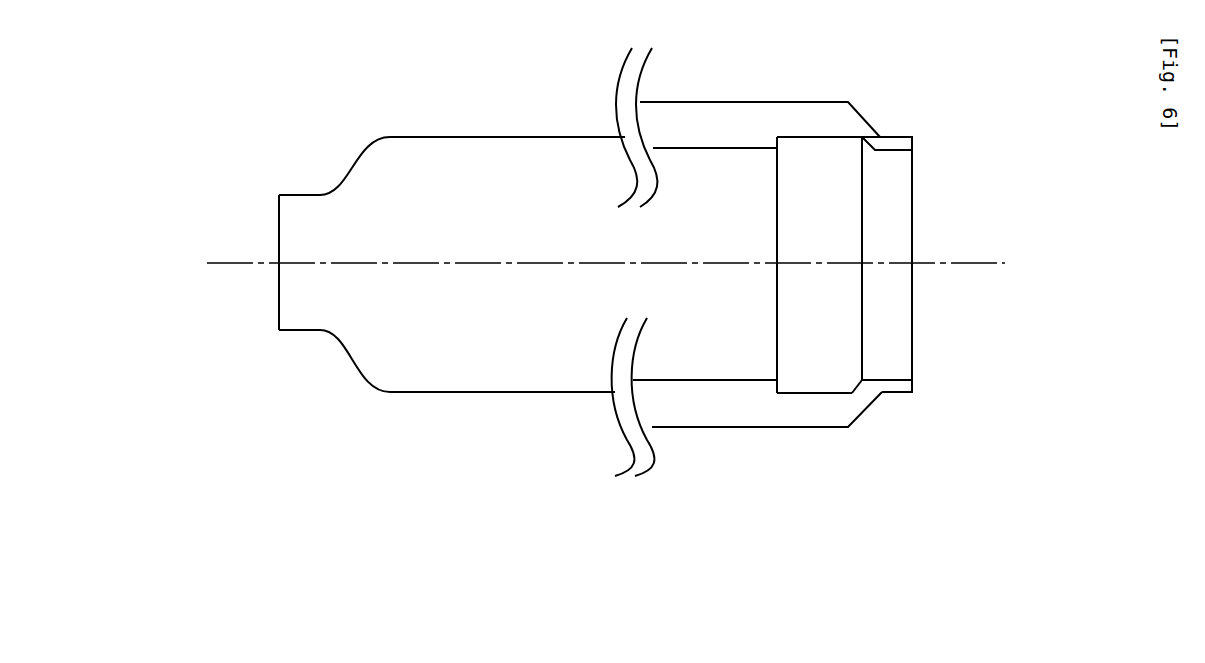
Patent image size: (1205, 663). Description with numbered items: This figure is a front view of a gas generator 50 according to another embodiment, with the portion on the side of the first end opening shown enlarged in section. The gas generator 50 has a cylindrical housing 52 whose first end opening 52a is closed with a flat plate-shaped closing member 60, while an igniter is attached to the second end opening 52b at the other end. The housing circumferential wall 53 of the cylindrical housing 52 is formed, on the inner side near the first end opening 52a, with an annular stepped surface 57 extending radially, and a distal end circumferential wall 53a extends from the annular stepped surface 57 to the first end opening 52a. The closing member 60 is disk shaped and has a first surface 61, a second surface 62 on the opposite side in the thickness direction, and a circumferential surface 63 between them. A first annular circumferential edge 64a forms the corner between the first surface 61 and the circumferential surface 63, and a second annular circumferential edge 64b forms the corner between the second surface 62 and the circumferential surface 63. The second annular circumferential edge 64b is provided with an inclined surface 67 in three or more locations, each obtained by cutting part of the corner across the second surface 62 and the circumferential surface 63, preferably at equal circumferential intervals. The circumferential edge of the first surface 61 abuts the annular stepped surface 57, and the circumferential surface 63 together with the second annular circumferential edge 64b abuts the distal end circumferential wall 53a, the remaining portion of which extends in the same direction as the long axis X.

The gas generator 50 is at (597, 271).
The cylindrical housing 52 is at (421, 262).
The first end opening 52a is at (935, 252).
The second end opening 52b is at (279, 222).
The housing circumferential wall 53 is at (710, 112).
The distal end circumferential wall 53a is at (808, 390).
The annular stepped surface 57 is at (778, 390).
The flat plate-shaped closing member 60 is at (829, 211).
The first surface 61 is at (777, 286).
The second surface 62 is at (862, 335).
The circumferential surface 63 is at (822, 135).
The first annular circumferential edge 64a is at (777, 135).
The second annular circumferential edge 64b is at (862, 137).
The inclined surface 67 is at (853, 393).
The long axis X is at (620, 266).